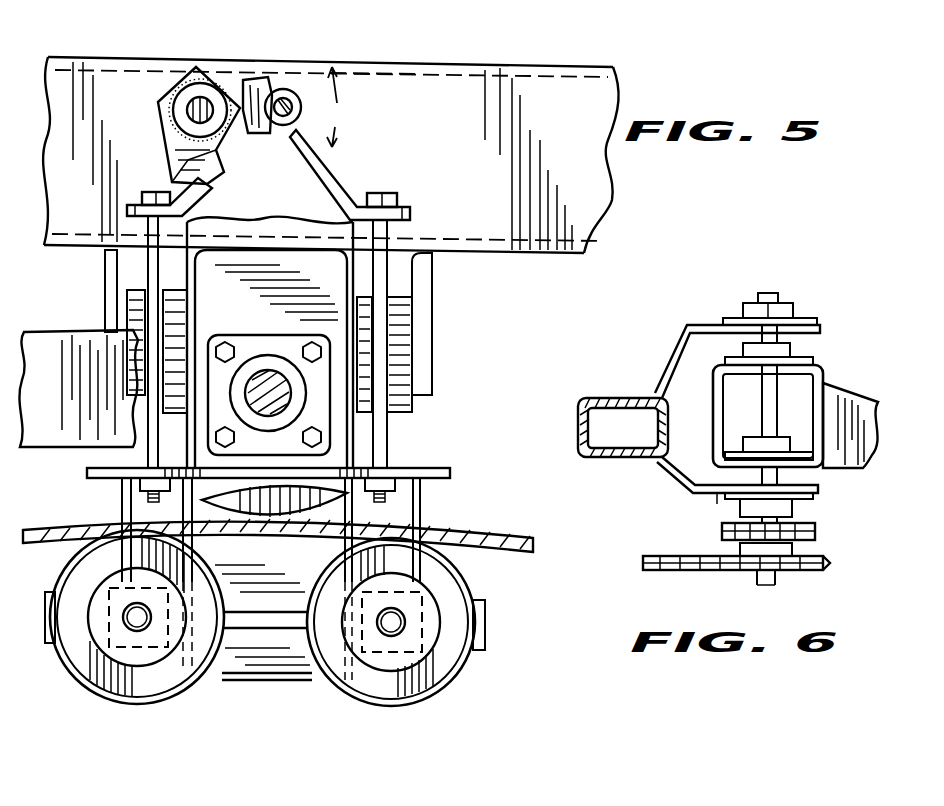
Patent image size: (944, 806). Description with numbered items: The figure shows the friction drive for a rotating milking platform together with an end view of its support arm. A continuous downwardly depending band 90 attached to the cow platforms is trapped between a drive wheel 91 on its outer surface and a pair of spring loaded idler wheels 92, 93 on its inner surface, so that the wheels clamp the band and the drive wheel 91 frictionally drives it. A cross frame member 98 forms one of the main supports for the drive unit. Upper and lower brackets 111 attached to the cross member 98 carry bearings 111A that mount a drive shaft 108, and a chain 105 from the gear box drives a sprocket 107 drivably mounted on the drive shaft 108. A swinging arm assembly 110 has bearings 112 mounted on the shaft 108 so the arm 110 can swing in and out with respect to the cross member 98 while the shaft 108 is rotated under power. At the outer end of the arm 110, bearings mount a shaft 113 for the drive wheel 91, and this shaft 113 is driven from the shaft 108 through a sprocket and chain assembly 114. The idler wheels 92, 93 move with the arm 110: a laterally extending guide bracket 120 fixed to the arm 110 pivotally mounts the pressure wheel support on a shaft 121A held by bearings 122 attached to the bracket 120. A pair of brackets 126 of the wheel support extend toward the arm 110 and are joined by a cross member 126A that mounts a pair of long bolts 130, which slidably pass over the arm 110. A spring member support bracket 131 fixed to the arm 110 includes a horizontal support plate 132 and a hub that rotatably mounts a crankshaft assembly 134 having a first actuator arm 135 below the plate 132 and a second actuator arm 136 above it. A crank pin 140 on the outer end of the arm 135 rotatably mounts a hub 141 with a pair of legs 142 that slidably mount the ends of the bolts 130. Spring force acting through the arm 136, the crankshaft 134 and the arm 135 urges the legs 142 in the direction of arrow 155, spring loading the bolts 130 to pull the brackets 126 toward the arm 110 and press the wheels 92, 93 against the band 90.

In FIG. 5, the cross frame member 98 is at (99, 78).
In FIG. 6, the cross frame member 98 is at (594, 400).
In FIG. 5, the second actuator arm 136 is at (210, 66).
In FIG. 5, the crankshaft assembly 134 is at (193, 112).
In FIG. 5, the horizontal support plate 132 is at (224, 77).
In FIG. 5, the first actuator arm 135 is at (262, 83).
In FIG. 5, the hub 141 is at (300, 112).
In FIG. 5, the crank pin 140 is at (290, 88).
In FIG. 5, the arrow 155 is at (337, 87).
In FIG. 5, the legs 142 is at (333, 172).
In FIG. 5, the long bolts 130 is at (140, 228).
In FIG. 5, the spring member support bracket 131 is at (327, 283).
In FIG. 5, the shaft 113 is at (273, 380).
In FIG. 5, the swinging arm assembly 110 is at (82, 330).
In FIG. 6, the swinging arm assembly 110 is at (820, 468).
In FIG. 5, the cross member 126A is at (123, 466).
In FIG. 5, the brackets 126 is at (125, 503).
In FIG. 5, the drive wheel 91 is at (297, 500).
In FIG. 5, the band 90 is at (468, 533).
In FIG. 5, the idler wheel 93 is at (100, 673).
In FIG. 5, the idler wheel 92 is at (447, 677).
In FIG. 5, the bearings 122 is at (160, 692).
In FIG. 5, the shaft 121A is at (228, 630).
In FIG. 5, the guide bracket 120 is at (268, 674).
In FIG. 6, the guide bracket 120 is at (852, 395).
In FIG. 6, the brackets 111 is at (660, 340).
In FIG. 6, the bearings 111A is at (737, 316).
In FIG. 6, the bearings 112 is at (777, 437).
In FIG. 6, the drive shaft 108 is at (760, 413).
In FIG. 6, the sprocket and chain assembly 114 is at (813, 532).
In FIG. 6, the chain 105 is at (664, 571).
In FIG. 6, the sprocket 107 is at (806, 572).